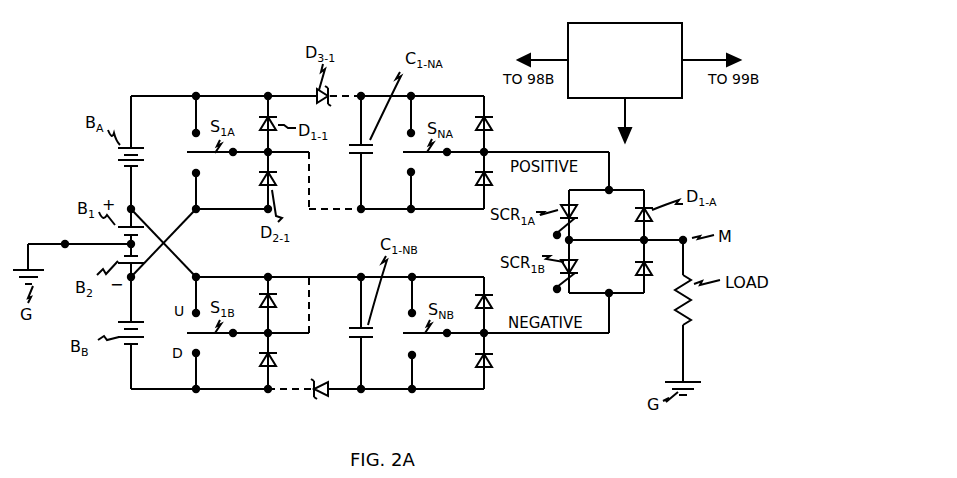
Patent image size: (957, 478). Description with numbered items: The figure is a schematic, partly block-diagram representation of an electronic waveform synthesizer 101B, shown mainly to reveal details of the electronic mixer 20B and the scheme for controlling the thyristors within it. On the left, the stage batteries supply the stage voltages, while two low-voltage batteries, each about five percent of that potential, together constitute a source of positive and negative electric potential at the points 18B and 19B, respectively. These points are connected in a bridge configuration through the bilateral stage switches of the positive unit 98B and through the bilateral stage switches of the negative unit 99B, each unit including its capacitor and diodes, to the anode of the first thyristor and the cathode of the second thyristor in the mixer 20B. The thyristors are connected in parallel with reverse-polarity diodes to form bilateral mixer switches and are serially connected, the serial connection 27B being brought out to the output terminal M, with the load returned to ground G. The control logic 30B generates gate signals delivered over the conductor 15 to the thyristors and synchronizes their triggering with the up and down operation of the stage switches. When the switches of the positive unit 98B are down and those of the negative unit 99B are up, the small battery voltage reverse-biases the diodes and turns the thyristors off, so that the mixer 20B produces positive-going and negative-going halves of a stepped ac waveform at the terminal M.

The conductor 15 is at (632, 125).
The positive electric potential point 18B is at (135, 208).
The negative electric potential point 19B is at (137, 279).
The electronic mixer 20B is at (615, 214).
The serial connection 27B is at (577, 239).
The control logic 30B is at (684, 44).
The positive unit 98B is at (470, 91).
The negative unit 99B is at (487, 393).
The electronic waveform synthesizer 101B is at (187, 425).